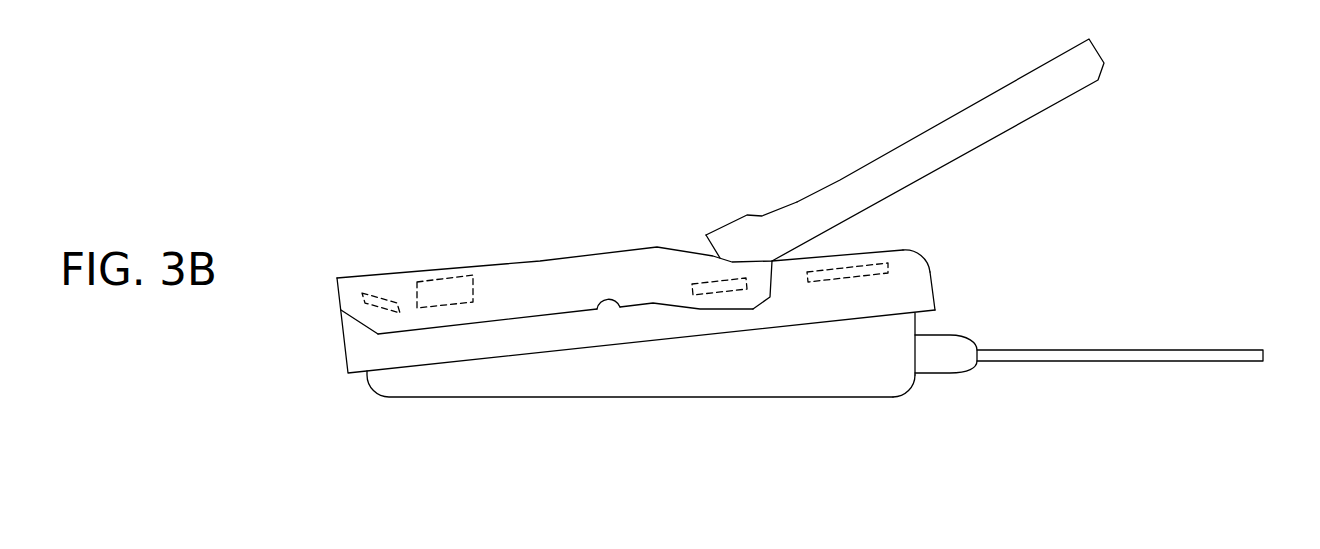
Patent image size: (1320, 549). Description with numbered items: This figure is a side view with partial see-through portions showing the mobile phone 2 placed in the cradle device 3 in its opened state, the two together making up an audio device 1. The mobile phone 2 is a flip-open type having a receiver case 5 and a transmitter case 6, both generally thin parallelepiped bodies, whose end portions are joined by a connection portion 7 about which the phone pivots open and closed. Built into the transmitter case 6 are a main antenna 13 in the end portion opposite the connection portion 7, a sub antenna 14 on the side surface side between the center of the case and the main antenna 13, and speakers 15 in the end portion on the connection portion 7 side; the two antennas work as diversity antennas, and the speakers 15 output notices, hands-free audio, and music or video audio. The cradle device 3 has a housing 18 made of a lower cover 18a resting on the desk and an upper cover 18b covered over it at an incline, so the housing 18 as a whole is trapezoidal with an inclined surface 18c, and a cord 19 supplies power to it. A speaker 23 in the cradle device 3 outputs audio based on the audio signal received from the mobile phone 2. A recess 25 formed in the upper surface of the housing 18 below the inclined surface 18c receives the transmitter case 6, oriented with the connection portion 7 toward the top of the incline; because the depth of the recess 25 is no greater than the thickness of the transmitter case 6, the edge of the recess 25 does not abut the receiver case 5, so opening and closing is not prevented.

The audio device 1 is at (1262, 115).
The mobile phone 2 is at (515, 262).
The cradle device 3 is at (512, 383).
The receiver case 5 is at (1012, 120).
The transmitter case 6 is at (408, 312).
The connection portion 7 is at (727, 225).
The main antenna 13 is at (370, 312).
The sub antenna 14 is at (450, 305).
The speakers 15 is at (715, 293).
The housing 18 is at (840, 385).
The lower cover 18a is at (898, 387).
The upper cover 18b is at (922, 283).
The inclined surface 18c is at (910, 250).
The cord 19 is at (1110, 348).
The speaker 23 is at (857, 263).
The recess 25 is at (619, 307).